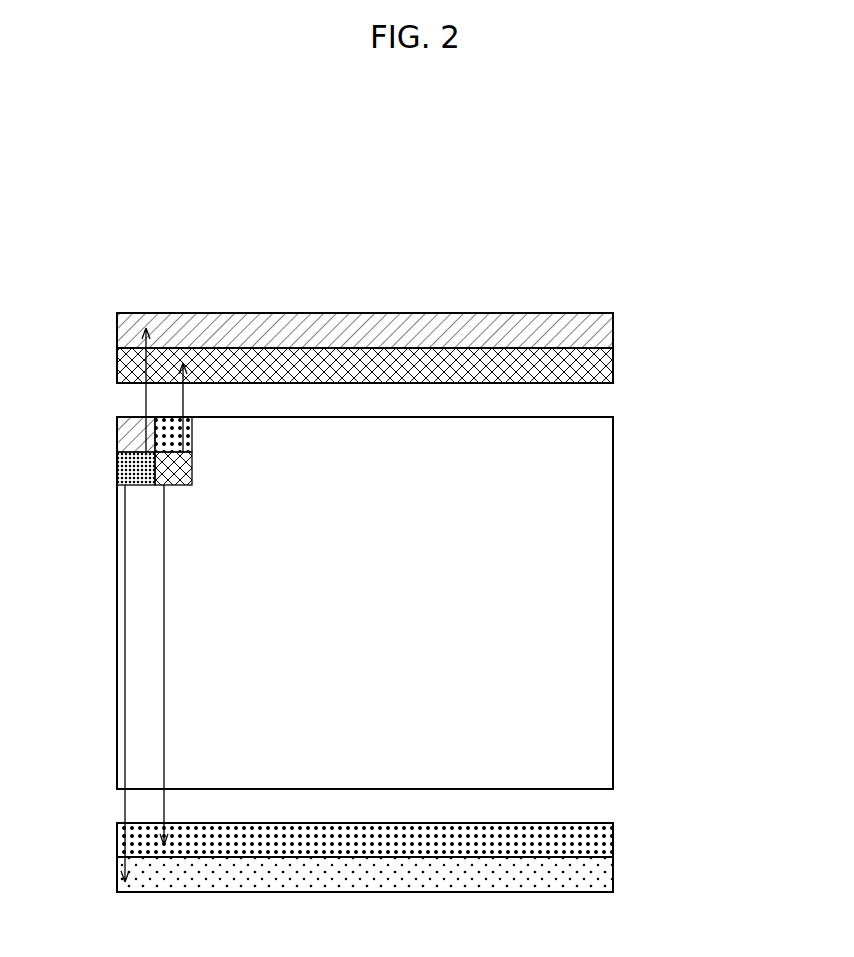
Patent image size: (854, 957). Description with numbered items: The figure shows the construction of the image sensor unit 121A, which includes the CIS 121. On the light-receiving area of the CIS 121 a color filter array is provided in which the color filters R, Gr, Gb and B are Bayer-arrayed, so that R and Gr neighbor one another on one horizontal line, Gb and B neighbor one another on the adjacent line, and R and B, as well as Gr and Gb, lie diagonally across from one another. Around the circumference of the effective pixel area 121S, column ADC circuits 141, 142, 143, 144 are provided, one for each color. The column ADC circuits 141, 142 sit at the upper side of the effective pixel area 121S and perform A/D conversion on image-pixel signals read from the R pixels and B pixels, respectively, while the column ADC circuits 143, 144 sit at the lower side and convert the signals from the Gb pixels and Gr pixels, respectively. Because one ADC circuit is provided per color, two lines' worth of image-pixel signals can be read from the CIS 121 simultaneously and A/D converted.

The image sensor unit 121A is at (666, 264).
The CIS 121 is at (366, 605).
The effective pixel area 121S is at (595, 606).
The column ADC circuit 141 is at (597, 333).
The column ADC circuit 142 is at (598, 367).
The column ADC circuit 143 is at (598, 839).
The column ADC circuit 144 is at (598, 873).